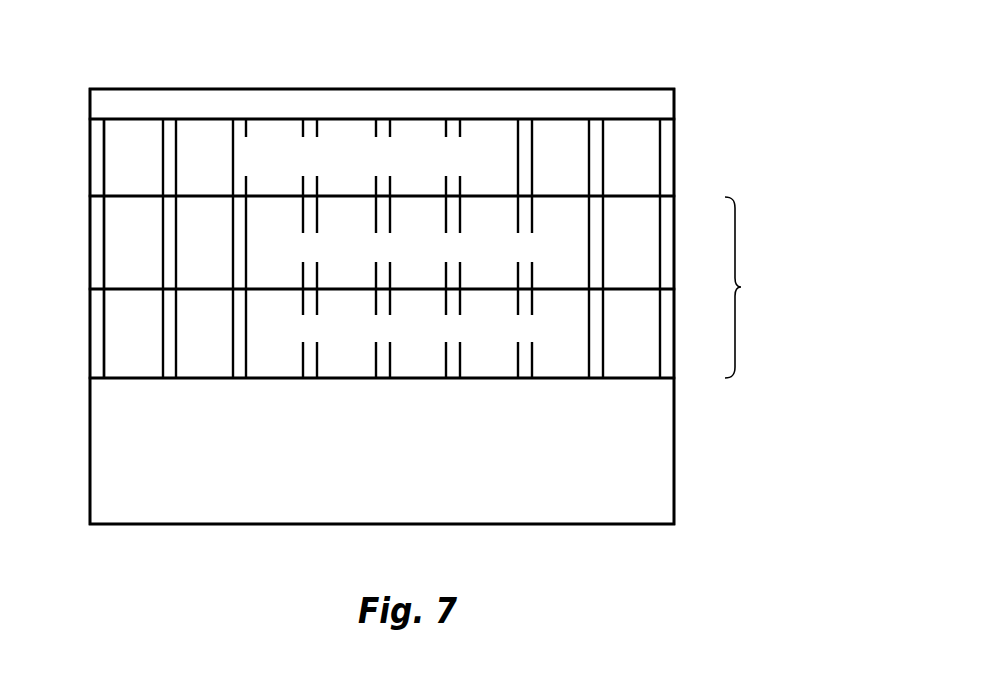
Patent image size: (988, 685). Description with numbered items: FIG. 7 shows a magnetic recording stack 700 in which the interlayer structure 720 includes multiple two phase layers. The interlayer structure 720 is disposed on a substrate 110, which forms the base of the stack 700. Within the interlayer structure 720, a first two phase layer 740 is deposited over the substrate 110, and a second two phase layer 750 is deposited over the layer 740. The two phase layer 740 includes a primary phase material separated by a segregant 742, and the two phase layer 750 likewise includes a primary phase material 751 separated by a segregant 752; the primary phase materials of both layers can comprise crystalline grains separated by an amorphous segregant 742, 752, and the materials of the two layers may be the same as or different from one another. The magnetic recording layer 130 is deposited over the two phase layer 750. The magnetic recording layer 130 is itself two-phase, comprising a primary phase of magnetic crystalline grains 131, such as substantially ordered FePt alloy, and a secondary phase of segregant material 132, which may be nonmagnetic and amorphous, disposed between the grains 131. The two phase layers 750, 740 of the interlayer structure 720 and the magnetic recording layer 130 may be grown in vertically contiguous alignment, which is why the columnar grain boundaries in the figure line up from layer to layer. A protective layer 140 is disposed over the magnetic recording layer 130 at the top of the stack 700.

The stack 700 is at (340, 76).
The protective layer 140 is at (670, 98).
The magnetic recording layer 130 is at (676, 150).
The segregant material 132 is at (97, 150).
The magnetic crystalline grains 131 is at (118, 148).
The two phase layer 750 is at (676, 242).
The segregant 752 is at (97, 247).
The primary phase material 751 is at (112, 248).
The two phase layer 740 is at (676, 315).
The segregant 742 is at (97, 345).
The interlayer structure 720 is at (785, 287).
The substrate 110 is at (667, 417).